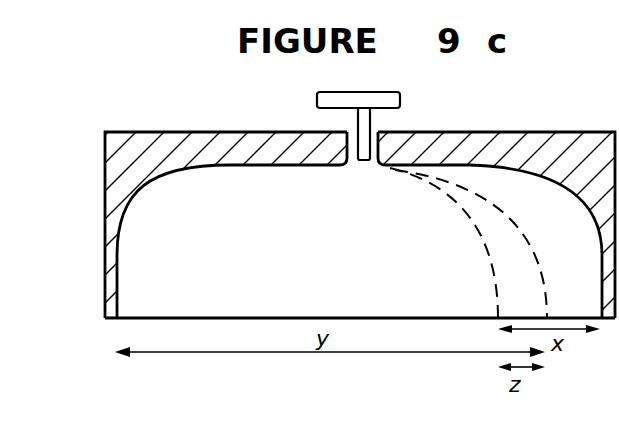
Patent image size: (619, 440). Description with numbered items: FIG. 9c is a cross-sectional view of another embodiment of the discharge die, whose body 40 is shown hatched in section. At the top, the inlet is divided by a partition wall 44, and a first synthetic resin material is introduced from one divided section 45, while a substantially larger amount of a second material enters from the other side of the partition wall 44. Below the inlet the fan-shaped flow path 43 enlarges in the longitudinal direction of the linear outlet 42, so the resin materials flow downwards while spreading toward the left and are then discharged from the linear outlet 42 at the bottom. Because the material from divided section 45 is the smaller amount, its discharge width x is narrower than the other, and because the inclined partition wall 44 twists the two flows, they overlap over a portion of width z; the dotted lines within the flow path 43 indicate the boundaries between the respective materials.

The mold body 40 is at (97, 208).
The linear outlet 42 is at (158, 319).
The fan-shaped flow path 43 is at (318, 260).
The partition wall 44 is at (400, 101).
The divided section 45 is at (318, 93).